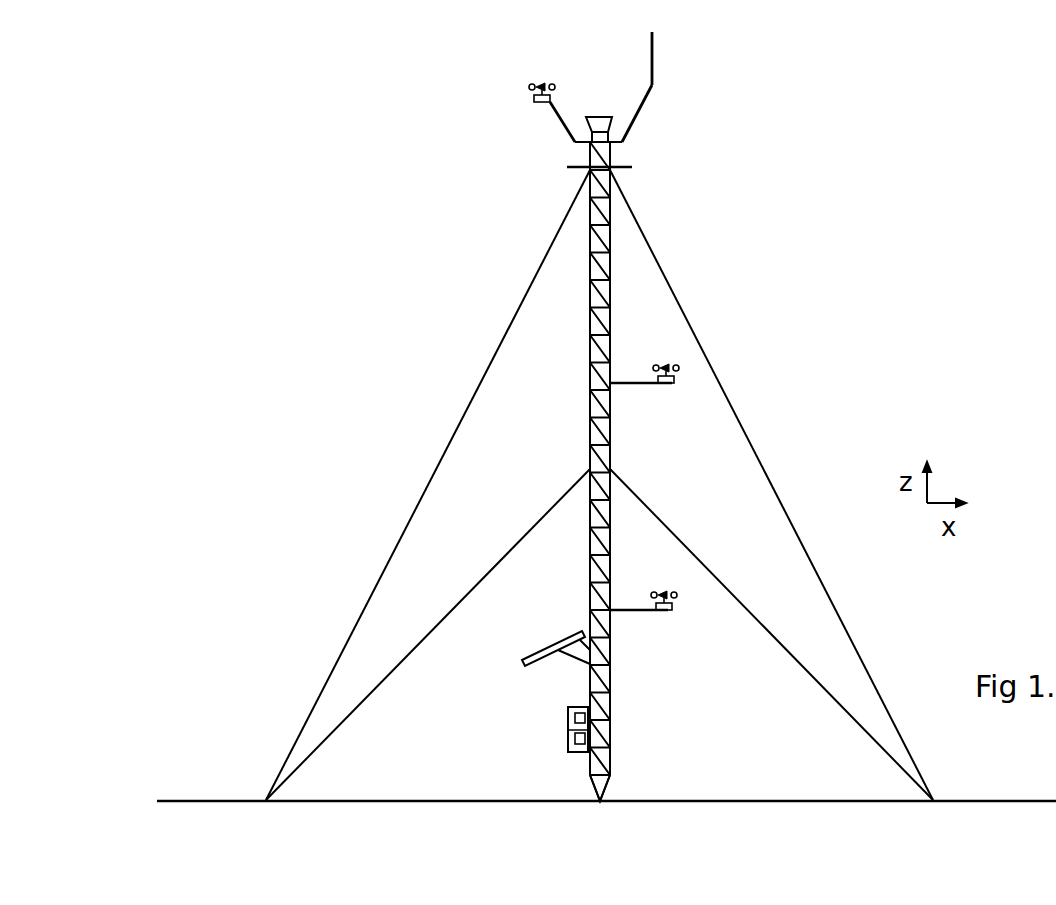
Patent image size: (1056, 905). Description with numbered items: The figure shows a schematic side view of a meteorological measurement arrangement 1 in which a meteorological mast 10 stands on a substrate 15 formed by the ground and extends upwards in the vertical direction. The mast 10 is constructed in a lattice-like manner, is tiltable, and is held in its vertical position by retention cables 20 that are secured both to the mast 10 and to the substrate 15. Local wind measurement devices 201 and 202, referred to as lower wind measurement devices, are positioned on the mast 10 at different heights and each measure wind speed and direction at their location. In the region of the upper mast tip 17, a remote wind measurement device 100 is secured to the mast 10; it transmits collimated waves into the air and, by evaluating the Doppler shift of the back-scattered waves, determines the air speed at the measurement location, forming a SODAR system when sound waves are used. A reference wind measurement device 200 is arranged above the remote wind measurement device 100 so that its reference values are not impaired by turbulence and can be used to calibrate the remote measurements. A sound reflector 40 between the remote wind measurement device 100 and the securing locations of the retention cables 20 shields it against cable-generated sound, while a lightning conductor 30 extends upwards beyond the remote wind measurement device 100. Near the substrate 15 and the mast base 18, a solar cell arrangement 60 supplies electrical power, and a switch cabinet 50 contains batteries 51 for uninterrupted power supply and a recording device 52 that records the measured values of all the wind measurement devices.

The meteorological measurement arrangement 1 is at (278, 93).
The meteorological mast 10 is at (590, 455).
The substrate 15 is at (770, 800).
The mast tip 17 is at (622, 143).
The mast base 18 is at (606, 800).
The retention cables 20 is at (482, 378).
The lightning conductor 30 is at (654, 84).
The sound reflector 40 is at (568, 166).
The switch cabinet 50 is at (568, 730).
The batteries 51 is at (568, 717).
The recording device 52 is at (568, 745).
The solar cell arrangement 60 is at (527, 655).
The remote wind measurement device 100 is at (607, 117).
The reference wind measurement device 200 is at (535, 99).
The lower wind measurement device 201 is at (666, 385).
The lower wind measurement device 202 is at (660, 612).